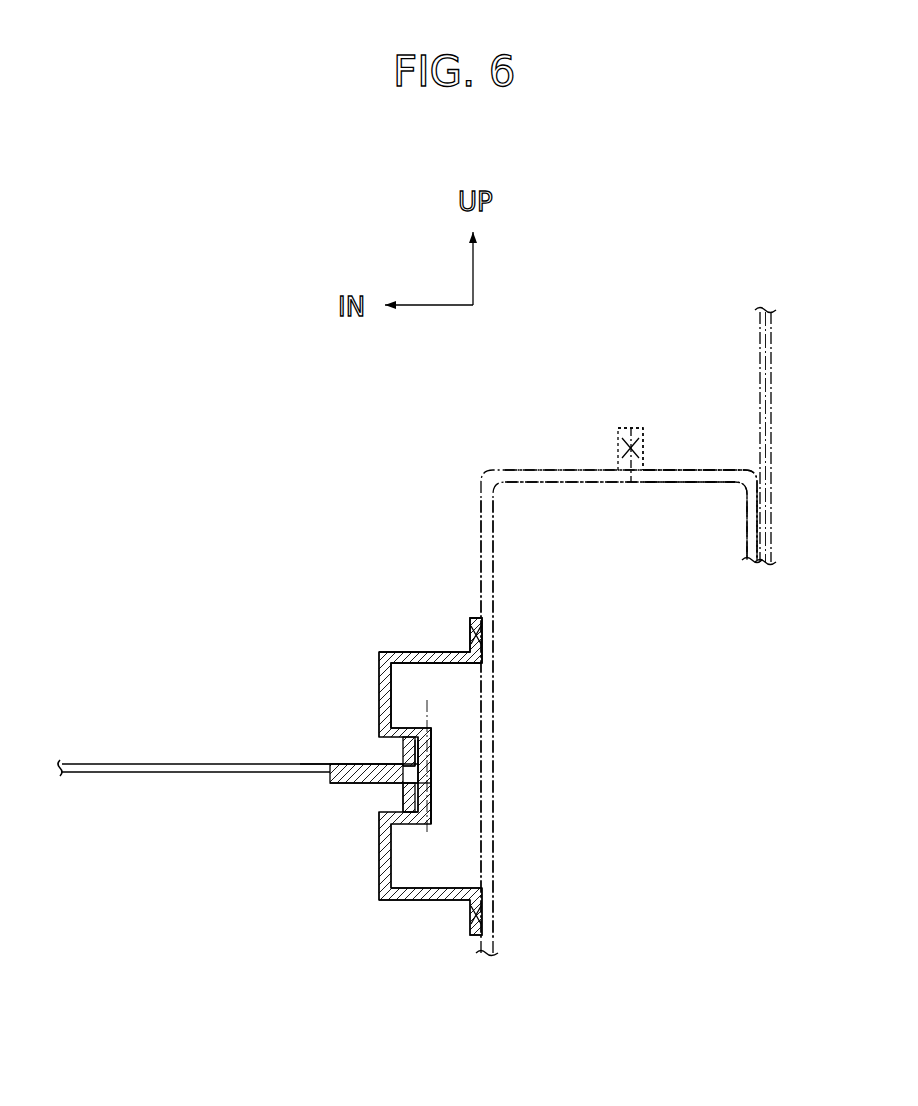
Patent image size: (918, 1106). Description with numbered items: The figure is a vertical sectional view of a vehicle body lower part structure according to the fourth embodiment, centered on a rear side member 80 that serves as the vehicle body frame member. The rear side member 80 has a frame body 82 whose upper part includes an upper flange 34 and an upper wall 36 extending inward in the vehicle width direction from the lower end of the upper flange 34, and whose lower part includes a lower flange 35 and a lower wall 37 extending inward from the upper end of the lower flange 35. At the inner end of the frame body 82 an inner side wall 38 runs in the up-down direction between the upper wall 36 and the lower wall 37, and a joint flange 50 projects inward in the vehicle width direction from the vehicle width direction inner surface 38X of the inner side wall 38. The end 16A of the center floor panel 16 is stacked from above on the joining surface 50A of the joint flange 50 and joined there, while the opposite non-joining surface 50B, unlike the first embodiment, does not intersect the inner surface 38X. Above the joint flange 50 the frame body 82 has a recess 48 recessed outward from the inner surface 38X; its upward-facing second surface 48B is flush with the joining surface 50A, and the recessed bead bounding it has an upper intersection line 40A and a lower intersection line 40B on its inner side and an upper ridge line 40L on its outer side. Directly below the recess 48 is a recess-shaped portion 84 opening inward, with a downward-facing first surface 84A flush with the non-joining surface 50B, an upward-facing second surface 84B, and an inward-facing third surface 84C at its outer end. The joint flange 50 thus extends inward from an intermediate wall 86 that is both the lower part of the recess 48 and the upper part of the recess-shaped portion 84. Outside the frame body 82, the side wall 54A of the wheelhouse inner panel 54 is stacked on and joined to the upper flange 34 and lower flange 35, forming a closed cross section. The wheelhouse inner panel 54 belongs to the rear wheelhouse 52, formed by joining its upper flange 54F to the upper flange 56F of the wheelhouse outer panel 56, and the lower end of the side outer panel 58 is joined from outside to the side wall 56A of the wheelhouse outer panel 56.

The center floor panel 16 is at (138, 762).
The end of the center floor panel 16A is at (396, 763).
The upper flange 34 is at (470, 632).
The lower flange 35 is at (470, 930).
The upper wall 36 is at (421, 651).
The lower wall 37 is at (420, 901).
The inner side wall 38 is at (377, 668).
The vehicle width direction inner surface 38X is at (378, 862).
The upper intersection line 40A is at (415, 742).
The lower intersection line 40B is at (431, 771).
The upper ridge line 40L is at (431, 728).
The recess 48 is at (397, 748).
The second surface 48B is at (400, 754).
The joint flange 50 is at (335, 788).
The joining surface 50A is at (396, 752).
The non-joining surface 50B is at (396, 793).
The rear wheelhouse 52 is at (566, 406).
The wheelhouse inner panel 54 is at (562, 467).
The side wall of the wheelhouse inner panel 54A is at (494, 742).
The upper flange of the wheelhouse inner panel 54F is at (618, 446).
The wheelhouse outer panel 56 is at (695, 465).
The side wall of the wheelhouse outer panel 56A is at (747, 548).
The upper flange of the wheelhouse outer panel 56F is at (645, 442).
The side outer panel 58 is at (775, 418).
The rear side member 80 is at (339, 538).
The frame body 82 is at (424, 578).
The recess-shaped portion 84 is at (399, 798).
The first surface 84A is at (431, 790).
The second surface 84B is at (413, 826).
The third surface 84C is at (431, 808).
The intermediate wall 86 is at (430, 757).